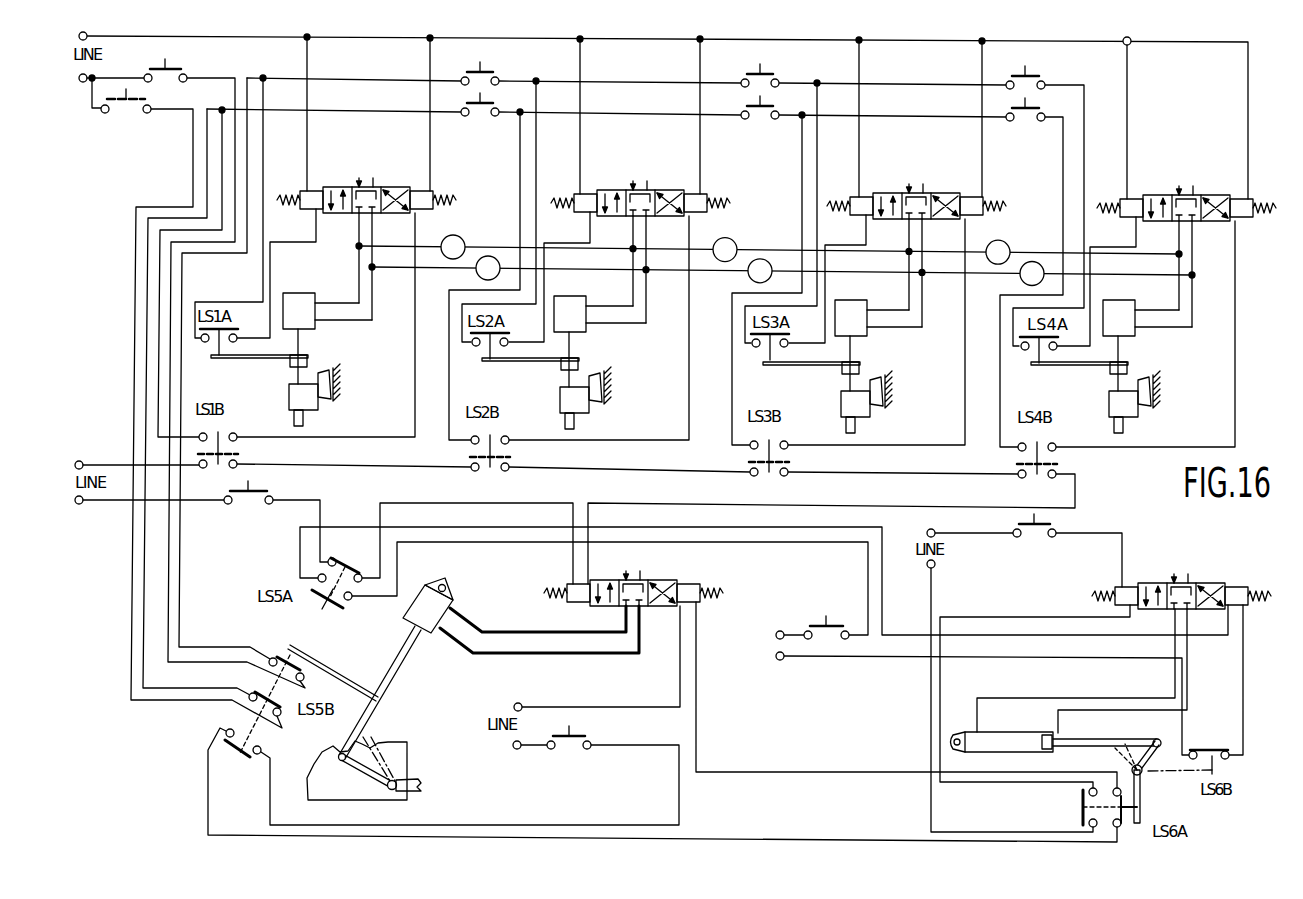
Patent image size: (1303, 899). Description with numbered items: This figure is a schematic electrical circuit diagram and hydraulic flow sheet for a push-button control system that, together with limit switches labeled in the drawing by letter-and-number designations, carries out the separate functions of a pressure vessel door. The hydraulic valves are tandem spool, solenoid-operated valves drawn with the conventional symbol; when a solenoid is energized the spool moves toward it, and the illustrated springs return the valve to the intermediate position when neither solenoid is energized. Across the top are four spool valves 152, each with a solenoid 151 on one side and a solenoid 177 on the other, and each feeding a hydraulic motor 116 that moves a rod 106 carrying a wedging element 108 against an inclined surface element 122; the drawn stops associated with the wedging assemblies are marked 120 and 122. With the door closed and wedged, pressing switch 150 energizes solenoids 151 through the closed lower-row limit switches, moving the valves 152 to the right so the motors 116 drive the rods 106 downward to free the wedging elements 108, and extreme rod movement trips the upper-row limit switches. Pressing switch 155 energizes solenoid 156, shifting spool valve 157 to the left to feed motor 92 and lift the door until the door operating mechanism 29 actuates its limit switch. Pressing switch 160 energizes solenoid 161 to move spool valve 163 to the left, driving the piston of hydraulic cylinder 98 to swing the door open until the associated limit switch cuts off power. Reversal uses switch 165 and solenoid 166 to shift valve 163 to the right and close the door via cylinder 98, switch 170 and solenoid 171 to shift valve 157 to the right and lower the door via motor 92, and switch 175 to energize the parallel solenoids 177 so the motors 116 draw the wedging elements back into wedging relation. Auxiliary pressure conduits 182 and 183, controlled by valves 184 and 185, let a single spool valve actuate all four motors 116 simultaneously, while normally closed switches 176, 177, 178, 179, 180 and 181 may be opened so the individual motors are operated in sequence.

The switch 175 is at (174, 74).
The switch 150 is at (143, 111).
The switch 176 is at (482, 73).
The switch 179 is at (481, 116).
The solenoid 177 is at (764, 73).
The switch 180 is at (759, 119).
The switch 178 is at (1027, 77).
The switch 181 is at (1018, 120).
The spool valve 152 is at (349, 186).
The solenoid 151 is at (418, 187).
The valve 184 is at (452, 236).
The auxiliary hydraulic fluid pressure conduit 182 is at (480, 247).
The auxiliary hydraulic fluid pressure conduit 183 is at (382, 277).
The valve 185 is at (476, 273).
The hydraulic motor 116 is at (309, 303).
The rod 106 is at (303, 341).
The wedging element 108 is at (296, 401).
The stop 120 is at (330, 392).
The inclined surface element 122 is at (880, 397).
The switch 155 is at (258, 505).
The motor 92 is at (440, 607).
The door operating mechanism 29 is at (382, 715).
The solenoid 156 is at (570, 603).
The spool valve 157 is at (650, 580).
The solenoid 171 is at (695, 582).
The switch 160 is at (817, 620).
The switch 170 is at (583, 731).
The switch 165 is at (1041, 540).
The solenoid 166 is at (1135, 587).
The spool valve 163 is at (1197, 583).
The solenoid 161 is at (1242, 587).
The hydraulic cylinder 98 is at (1023, 732).